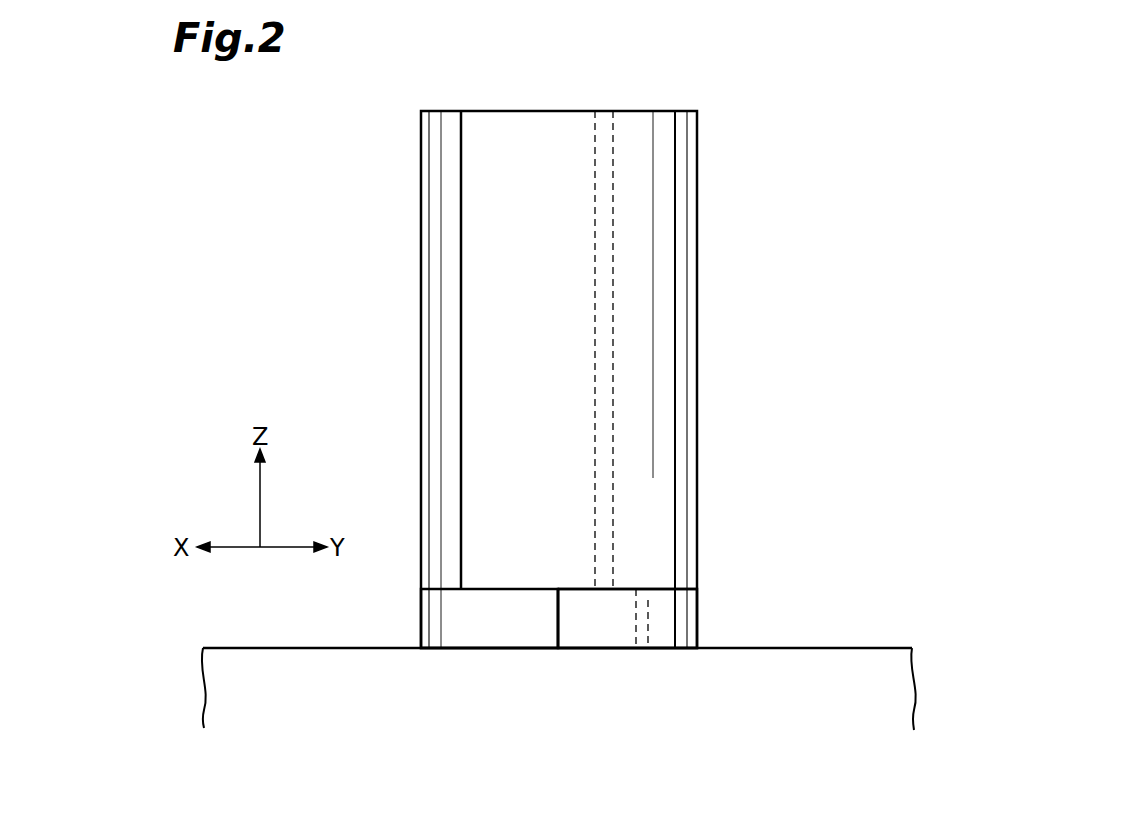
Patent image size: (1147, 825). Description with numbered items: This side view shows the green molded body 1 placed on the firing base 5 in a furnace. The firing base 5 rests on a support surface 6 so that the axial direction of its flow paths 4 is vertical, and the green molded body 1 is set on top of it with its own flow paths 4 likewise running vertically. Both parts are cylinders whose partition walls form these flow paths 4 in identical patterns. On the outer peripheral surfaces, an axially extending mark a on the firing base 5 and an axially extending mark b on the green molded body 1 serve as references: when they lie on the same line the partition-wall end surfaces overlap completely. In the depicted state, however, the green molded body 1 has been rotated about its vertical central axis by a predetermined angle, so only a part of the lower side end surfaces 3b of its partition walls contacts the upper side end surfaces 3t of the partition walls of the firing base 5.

The green molded body 1 is at (722, 188).
The flow paths 4 is at (613, 142).
The mark b is at (461, 440).
The lower side end surfaces 3b is at (595, 590).
The upper side end surfaces 3t is at (648, 600).
The firing base 5 is at (660, 628).
The mark a is at (558, 628).
The support surface 6 is at (812, 648).